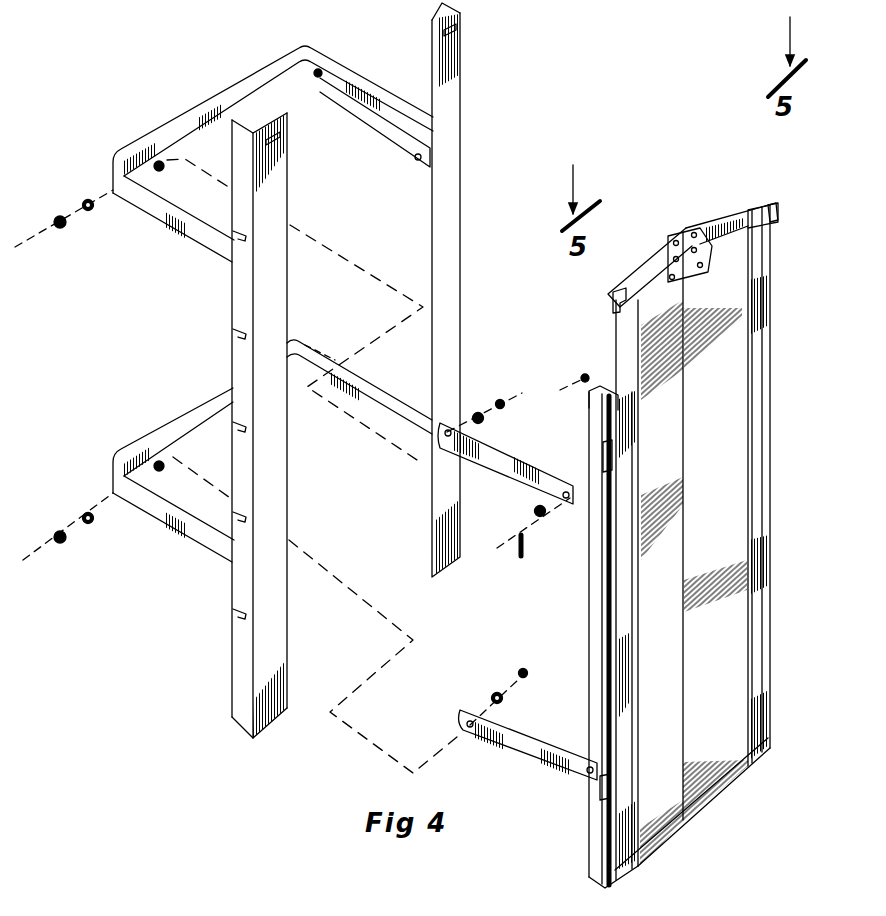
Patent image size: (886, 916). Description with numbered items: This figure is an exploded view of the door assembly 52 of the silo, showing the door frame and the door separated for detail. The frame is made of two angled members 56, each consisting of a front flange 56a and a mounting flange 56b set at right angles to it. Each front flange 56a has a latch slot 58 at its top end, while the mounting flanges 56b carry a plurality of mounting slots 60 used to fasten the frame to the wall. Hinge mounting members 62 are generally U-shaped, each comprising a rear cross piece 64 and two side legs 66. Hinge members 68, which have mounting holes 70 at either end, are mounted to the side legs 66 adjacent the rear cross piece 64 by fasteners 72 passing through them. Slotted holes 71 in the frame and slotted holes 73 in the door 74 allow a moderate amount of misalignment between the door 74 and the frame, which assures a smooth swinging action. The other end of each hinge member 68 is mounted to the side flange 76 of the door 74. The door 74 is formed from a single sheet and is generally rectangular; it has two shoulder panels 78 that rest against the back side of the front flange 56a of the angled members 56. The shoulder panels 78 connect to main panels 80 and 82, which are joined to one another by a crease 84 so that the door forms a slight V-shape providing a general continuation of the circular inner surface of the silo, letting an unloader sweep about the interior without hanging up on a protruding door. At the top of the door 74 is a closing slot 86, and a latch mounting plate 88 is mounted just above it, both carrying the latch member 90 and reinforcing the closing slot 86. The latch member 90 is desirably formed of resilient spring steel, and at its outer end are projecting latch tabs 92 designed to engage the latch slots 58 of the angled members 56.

The door assembly 52 is at (566, 110).
The angled member 56 is at (470, 86).
The front flange 56a is at (289, 620).
The mounting flange 56b is at (437, 8).
The latch slot 58 is at (458, 42).
The mounting slot 60 is at (240, 232).
The hinge mounting member 62 is at (244, 313).
The rear cross piece 64 is at (247, 79).
The side leg 66 is at (382, 88).
The hinge member 68 is at (369, 131).
The mounting hole 70 is at (417, 158).
The slotted hole 71 is at (112, 187).
The fastener 72 is at (316, 79).
The slotted hole 73 is at (618, 450).
The door 74 is at (683, 533).
The side flange 76 is at (772, 292).
The shoulder panel 78 is at (772, 667).
The main panel 80 is at (660, 828).
The main panel 82 is at (738, 770).
The crease 84 is at (684, 788).
The closing slot 86 is at (690, 272).
The latch mounting plate 88 is at (690, 226).
The latch member 90 is at (714, 213).
The latch tab 92 is at (775, 216).